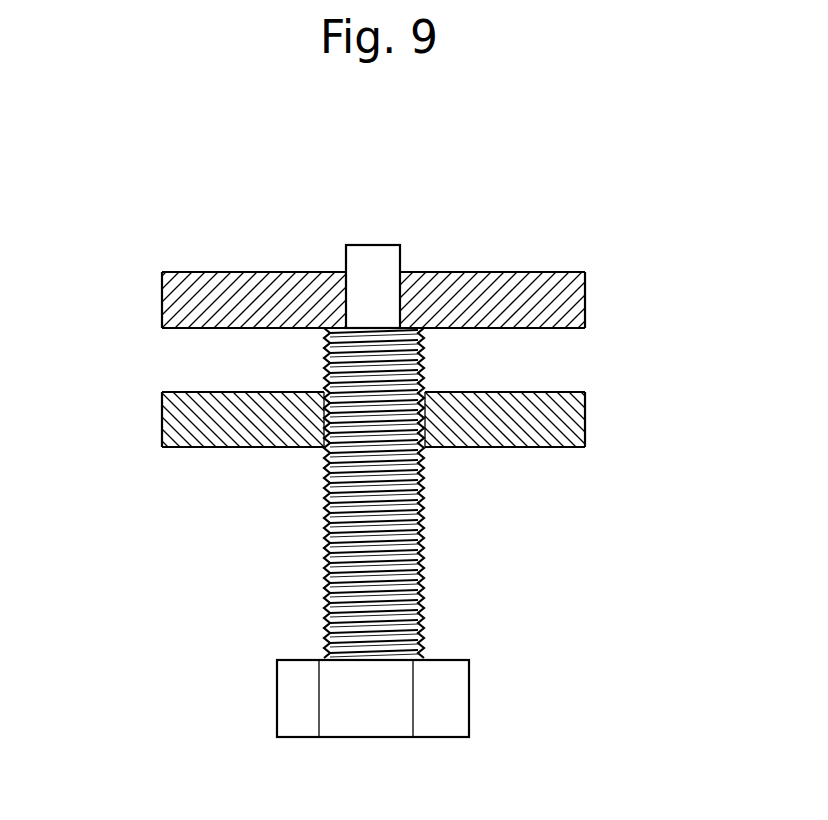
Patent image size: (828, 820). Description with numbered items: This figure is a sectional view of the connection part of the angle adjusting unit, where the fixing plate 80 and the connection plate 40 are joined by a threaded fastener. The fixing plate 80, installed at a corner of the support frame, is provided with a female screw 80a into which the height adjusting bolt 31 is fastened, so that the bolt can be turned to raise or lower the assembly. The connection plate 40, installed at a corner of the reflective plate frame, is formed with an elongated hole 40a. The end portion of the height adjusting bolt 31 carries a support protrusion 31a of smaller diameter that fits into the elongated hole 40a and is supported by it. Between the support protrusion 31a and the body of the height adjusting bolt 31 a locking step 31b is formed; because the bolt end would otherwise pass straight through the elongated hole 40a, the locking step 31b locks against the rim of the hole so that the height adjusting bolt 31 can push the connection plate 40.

The connection plate 40 is at (533, 288).
The elongated hole 40a is at (346, 272).
The support protrusion 31a is at (392, 267).
The locking step 31b is at (425, 318).
The height adjusting bolt 31 is at (425, 550).
The fixing plate 80 is at (210, 413).
The female screw 80a is at (330, 437).